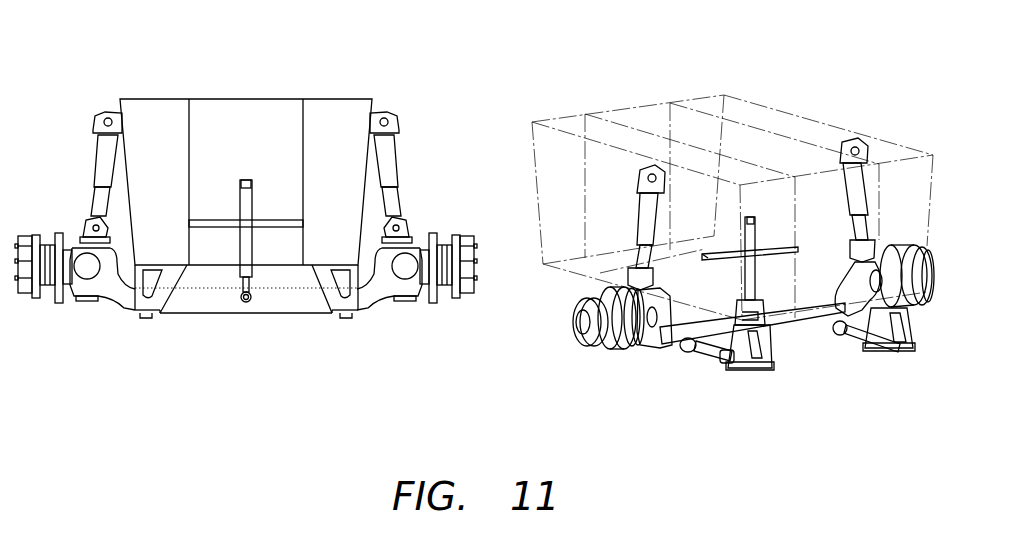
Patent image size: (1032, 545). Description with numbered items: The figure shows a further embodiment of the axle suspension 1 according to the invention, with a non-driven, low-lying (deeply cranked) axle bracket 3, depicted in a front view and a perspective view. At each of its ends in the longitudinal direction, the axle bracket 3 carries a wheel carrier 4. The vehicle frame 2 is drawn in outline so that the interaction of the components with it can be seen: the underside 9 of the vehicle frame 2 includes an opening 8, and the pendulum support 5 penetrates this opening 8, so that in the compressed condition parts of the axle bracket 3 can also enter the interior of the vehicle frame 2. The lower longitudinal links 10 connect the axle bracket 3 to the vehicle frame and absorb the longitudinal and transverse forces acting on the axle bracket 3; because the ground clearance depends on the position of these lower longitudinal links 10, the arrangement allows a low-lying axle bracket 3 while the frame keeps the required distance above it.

The axle assembly 1 is at (114, 352).
The vehicle frame 2 is at (370, 99).
The axle bracket 3 is at (300, 300).
The wheel carrier 4 is at (35, 216).
The pendulum support 5 is at (245, 206).
The opening 8 is at (735, 292).
The underside 9 is at (176, 268).
The lower longitudinal link 10 is at (715, 360).